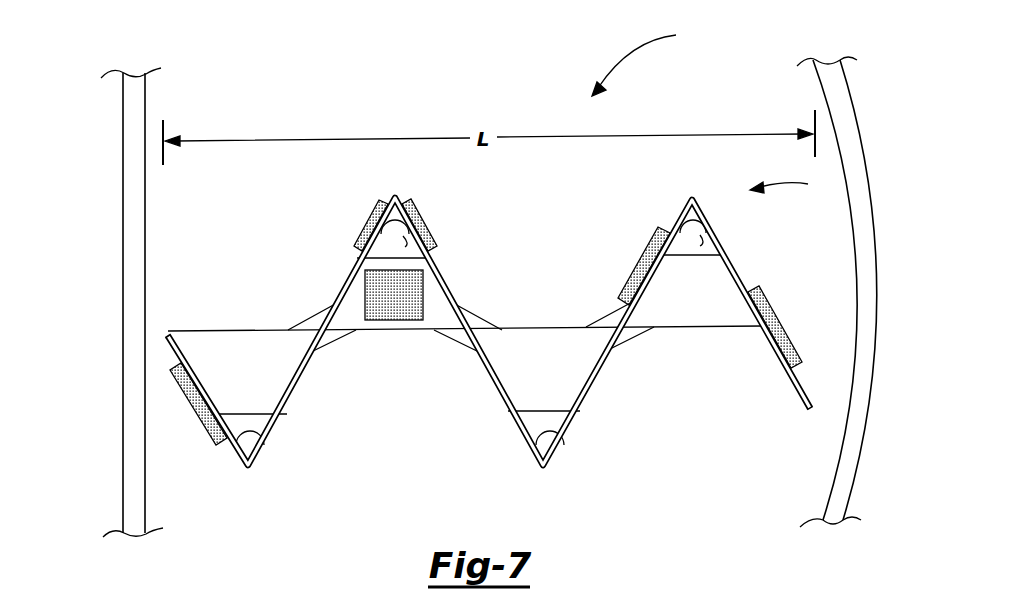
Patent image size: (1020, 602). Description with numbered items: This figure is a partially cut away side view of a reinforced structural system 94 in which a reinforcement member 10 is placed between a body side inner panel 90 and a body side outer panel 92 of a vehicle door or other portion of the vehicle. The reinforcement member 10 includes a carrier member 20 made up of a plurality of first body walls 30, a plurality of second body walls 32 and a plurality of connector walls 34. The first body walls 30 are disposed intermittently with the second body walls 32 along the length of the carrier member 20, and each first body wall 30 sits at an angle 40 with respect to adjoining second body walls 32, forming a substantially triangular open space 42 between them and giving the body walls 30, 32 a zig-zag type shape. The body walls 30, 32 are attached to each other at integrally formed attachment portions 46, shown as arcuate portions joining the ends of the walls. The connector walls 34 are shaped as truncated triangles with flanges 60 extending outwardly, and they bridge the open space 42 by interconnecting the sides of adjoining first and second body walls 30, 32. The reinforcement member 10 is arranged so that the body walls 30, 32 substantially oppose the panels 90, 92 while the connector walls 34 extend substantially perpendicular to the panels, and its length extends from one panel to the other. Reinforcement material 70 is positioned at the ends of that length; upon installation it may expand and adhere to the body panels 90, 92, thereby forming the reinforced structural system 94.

The reinforcement member 10 is at (808, 184).
The carrier member 20 is at (462, 262).
The first body walls 30 is at (166, 336).
The second body walls 32 is at (355, 275).
The connector walls 34 is at (231, 383).
The angle 40 is at (412, 238).
The substantially triangular open space 42 is at (231, 313).
The attachment portions 46 is at (396, 199).
The flanges 60 is at (316, 313).
The reinforcement material 70 is at (372, 236).
The body side inner panel 90 is at (130, 441).
The body side outer panel 92 is at (872, 212).
The reinforced structural system 94 is at (668, 35).